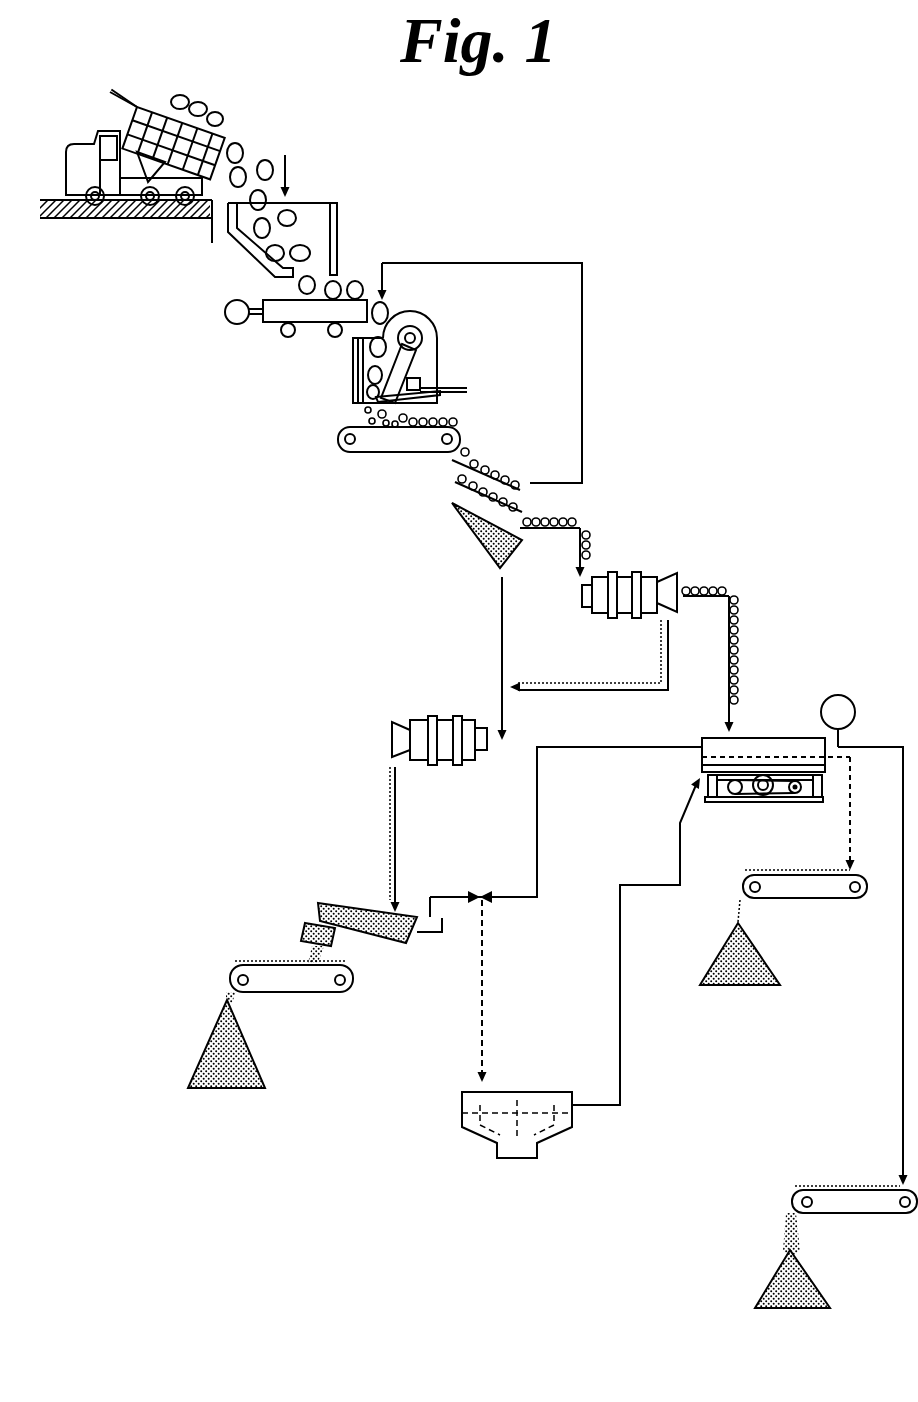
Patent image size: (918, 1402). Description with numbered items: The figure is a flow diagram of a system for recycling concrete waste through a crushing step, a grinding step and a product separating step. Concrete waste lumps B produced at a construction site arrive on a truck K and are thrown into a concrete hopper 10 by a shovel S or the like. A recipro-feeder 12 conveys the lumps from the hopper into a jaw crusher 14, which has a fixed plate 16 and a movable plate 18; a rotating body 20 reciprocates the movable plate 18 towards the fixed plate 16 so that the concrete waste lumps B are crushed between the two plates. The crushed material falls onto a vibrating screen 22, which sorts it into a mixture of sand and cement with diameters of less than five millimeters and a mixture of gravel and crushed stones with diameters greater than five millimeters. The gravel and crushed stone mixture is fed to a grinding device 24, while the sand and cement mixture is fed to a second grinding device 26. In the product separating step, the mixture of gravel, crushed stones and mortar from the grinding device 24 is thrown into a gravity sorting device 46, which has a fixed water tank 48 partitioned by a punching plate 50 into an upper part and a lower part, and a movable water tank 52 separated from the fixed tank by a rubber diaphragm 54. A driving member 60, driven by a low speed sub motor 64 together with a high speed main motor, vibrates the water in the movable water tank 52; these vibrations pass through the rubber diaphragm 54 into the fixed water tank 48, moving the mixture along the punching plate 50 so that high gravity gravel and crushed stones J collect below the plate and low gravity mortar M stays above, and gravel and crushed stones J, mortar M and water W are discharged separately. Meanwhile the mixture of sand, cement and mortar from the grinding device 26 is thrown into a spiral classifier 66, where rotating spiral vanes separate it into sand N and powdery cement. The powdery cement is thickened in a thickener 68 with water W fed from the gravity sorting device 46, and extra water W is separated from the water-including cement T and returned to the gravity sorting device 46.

The truck K is at (53, 182).
The concrete waste lumps B is at (172, 104).
The shovel S is at (230, 126).
The concrete hopper 10 is at (321, 200).
The recipro-feeder 12 is at (272, 324).
The jaw crusher 14 is at (406, 338).
The fixed plate 16 is at (365, 395).
The movable plate 18 is at (418, 362).
The rotating body 20 is at (410, 324).
The vibrating screen 22 is at (430, 472).
The grinding device 24 is at (645, 566).
The grinding device 26 is at (392, 708).
The gravity sorting device 46 is at (747, 761).
The fixed water tank 48 is at (786, 745).
The punching plate 50 is at (700, 757).
The movable water tank 52 is at (800, 770).
The rubber diaphragm 54 is at (700, 771).
The driving member 60 is at (765, 798).
The low speed sub motor 64 is at (797, 797).
The spiral classifier 66 is at (308, 895).
The thickener 68 is at (476, 1135).
The water W is at (545, 727).
The gravel and crushed stones J is at (765, 956).
The sand N is at (250, 1054).
The mortar M is at (775, 1268).
The water-including cement T is at (519, 1150).